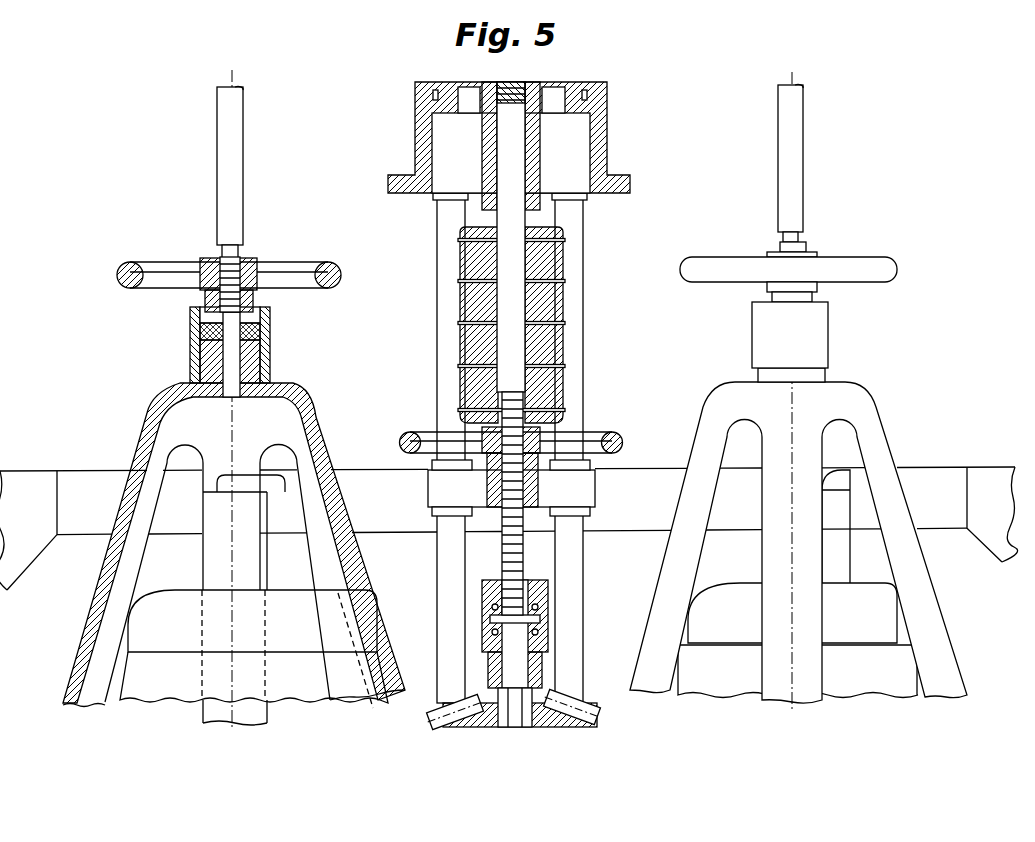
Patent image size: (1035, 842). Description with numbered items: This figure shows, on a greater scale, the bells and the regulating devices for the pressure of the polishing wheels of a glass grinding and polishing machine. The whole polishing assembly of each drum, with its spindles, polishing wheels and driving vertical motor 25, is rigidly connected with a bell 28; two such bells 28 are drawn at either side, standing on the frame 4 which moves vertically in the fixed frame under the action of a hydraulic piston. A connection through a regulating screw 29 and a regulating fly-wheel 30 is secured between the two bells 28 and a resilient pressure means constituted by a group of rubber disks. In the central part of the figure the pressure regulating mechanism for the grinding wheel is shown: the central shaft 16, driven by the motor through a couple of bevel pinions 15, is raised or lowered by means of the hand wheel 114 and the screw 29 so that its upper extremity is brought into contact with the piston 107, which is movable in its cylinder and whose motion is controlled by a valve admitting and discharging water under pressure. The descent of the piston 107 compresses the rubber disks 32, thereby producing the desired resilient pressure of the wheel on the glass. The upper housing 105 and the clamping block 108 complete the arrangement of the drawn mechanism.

The frame 4 is at (655, 470).
The bevel pinions 15 is at (557, 727).
The central shaft 16 is at (538, 652).
The vertical motor 25 is at (320, 688).
The bell 28 is at (294, 406).
The regulating screw 29 is at (515, 543).
The regulating fly-wheel 30 is at (327, 262).
The rubber disks 32 is at (548, 307).
The upper housing 105 is at (593, 157).
The piston 107 is at (532, 142).
The clamping block 108 is at (452, 485).
The hand wheel 114 is at (612, 432).